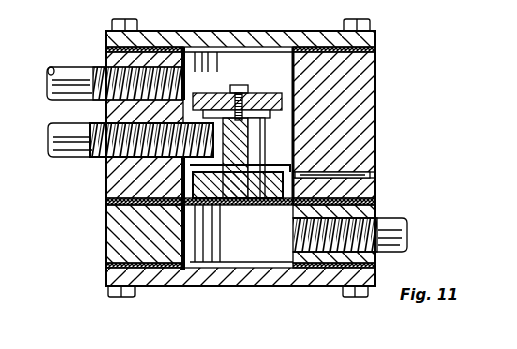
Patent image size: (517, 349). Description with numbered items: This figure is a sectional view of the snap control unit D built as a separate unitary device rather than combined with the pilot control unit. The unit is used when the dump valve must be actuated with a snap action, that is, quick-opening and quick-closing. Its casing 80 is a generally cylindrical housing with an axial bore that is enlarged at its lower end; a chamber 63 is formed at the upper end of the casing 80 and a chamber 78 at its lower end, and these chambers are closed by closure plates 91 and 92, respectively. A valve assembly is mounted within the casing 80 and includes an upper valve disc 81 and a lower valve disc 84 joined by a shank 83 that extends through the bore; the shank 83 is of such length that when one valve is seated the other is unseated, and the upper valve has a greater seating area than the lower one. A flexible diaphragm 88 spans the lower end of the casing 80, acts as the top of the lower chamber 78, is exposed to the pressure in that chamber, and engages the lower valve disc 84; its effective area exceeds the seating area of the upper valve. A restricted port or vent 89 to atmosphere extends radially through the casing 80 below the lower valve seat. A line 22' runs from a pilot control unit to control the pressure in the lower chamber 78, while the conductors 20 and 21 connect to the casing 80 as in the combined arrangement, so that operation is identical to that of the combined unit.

The snap control unit D is at (357, 83).
The line 20 is at (63, 158).
The conductor 21 is at (68, 70).
The line 22' is at (375, 235).
The chamber 63 is at (220, 63).
The chamber 78 is at (266, 255).
The housing 80 is at (364, 126).
The upper valve disc 81 is at (252, 92).
The shank 83 is at (233, 188).
The lower valve disc 84 is at (226, 212).
The flexible diaphragm 88 is at (376, 201).
The restricted port or vent 89 is at (370, 176).
The closure plate 91 is at (297, 36).
The closure plate 92 is at (200, 284).